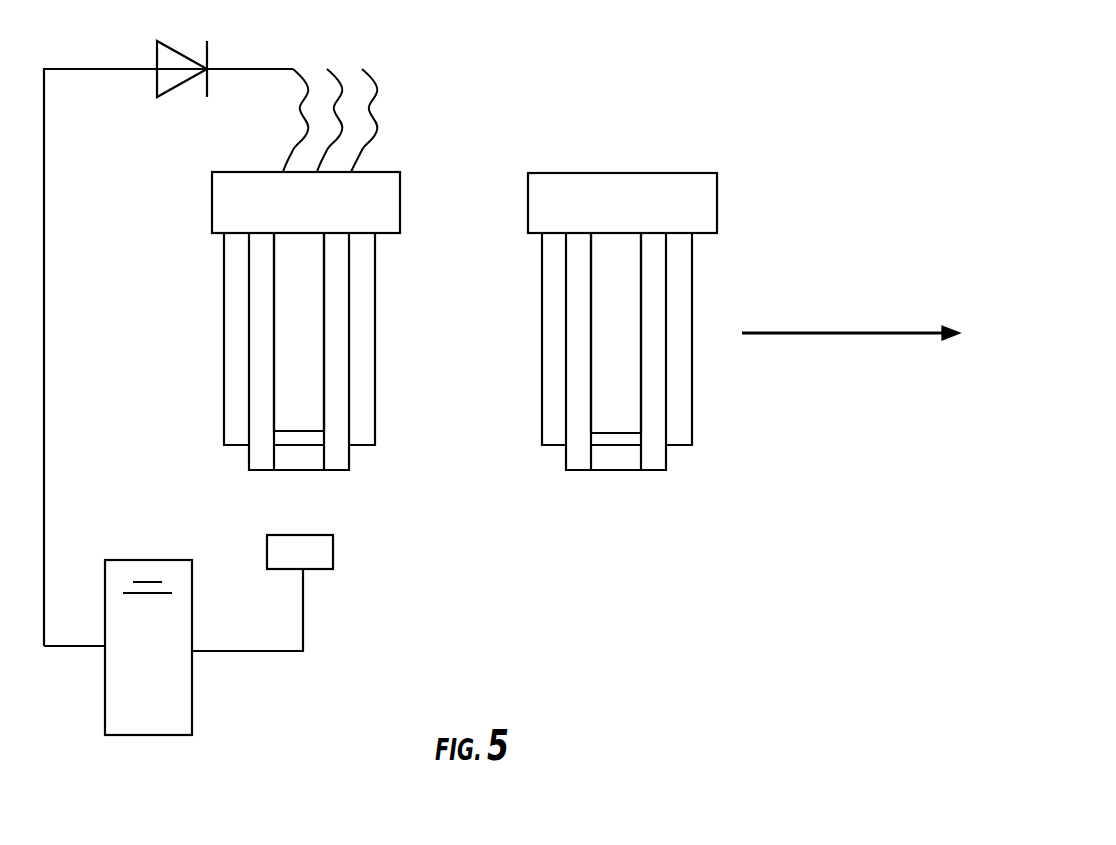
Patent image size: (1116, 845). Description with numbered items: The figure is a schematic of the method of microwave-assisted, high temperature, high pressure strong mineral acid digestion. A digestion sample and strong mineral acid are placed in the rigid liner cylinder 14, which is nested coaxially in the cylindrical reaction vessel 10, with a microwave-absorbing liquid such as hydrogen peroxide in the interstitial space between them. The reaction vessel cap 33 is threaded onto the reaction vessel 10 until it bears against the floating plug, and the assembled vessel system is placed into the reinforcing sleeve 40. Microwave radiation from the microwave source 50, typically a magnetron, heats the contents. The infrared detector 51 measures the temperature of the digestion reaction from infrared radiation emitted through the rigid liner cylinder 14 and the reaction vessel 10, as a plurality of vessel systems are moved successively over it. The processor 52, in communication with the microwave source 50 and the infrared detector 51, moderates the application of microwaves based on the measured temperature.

The cylindrical reaction vessel 10 is at (337, 289).
The rigid liner cylinder 14 is at (324, 345).
The reaction vessel cap 33 is at (296, 218).
The reinforcing sleeve 40 is at (370, 407).
The microwave source 50 is at (175, 90).
The infrared (IR) detector 51 is at (327, 557).
The processor (CPU) 52 is at (160, 681).